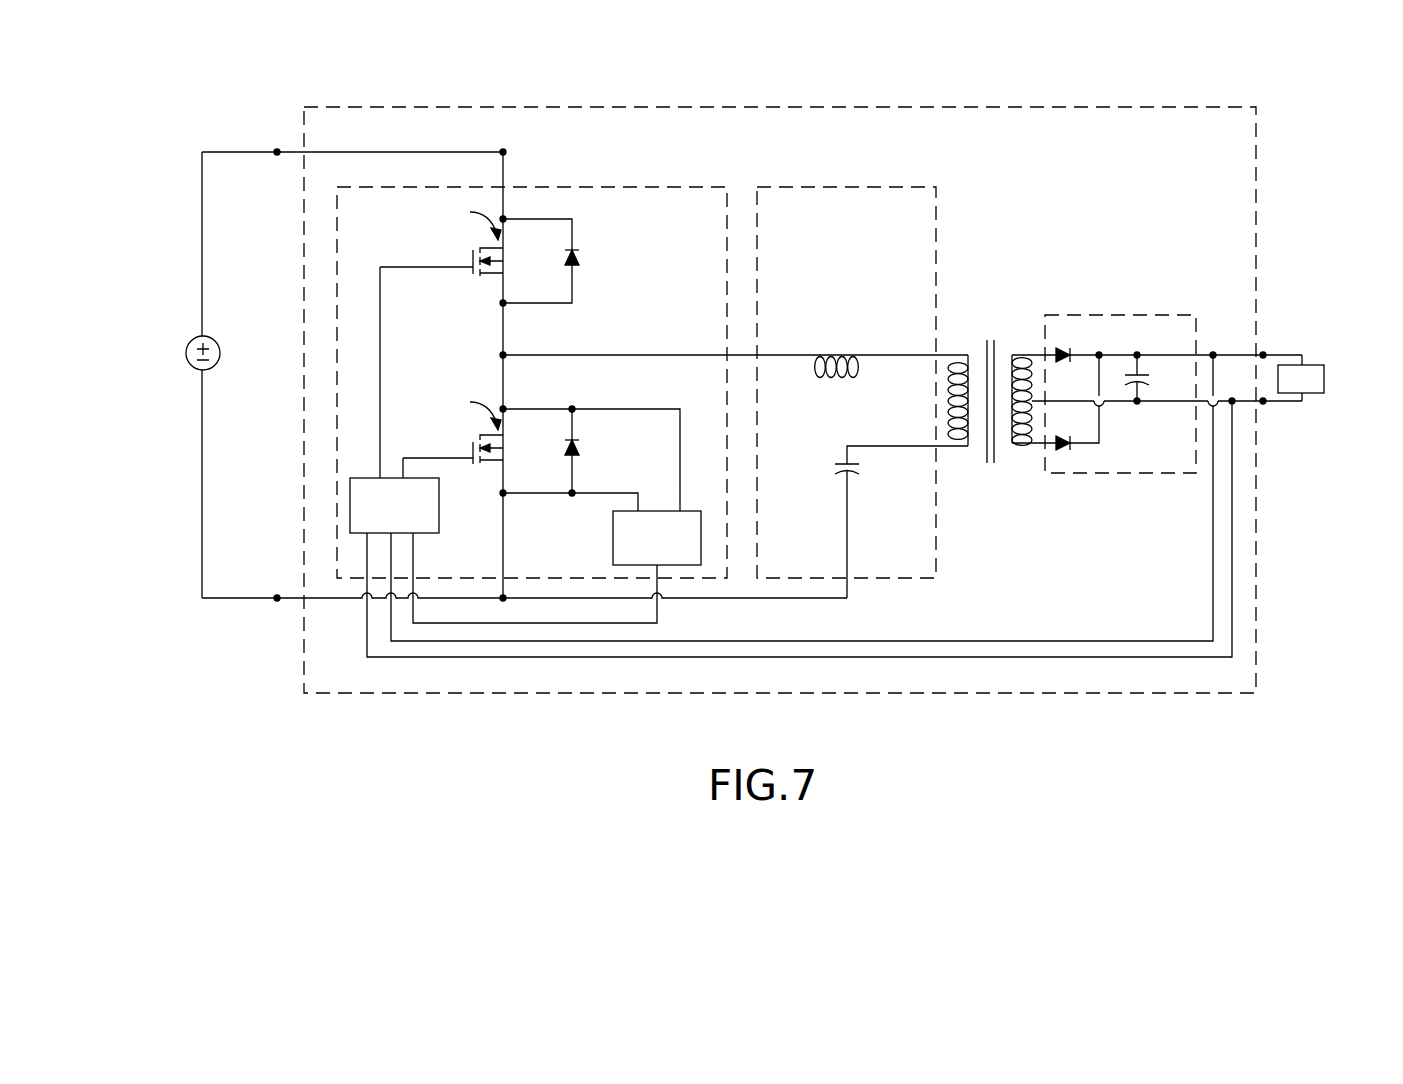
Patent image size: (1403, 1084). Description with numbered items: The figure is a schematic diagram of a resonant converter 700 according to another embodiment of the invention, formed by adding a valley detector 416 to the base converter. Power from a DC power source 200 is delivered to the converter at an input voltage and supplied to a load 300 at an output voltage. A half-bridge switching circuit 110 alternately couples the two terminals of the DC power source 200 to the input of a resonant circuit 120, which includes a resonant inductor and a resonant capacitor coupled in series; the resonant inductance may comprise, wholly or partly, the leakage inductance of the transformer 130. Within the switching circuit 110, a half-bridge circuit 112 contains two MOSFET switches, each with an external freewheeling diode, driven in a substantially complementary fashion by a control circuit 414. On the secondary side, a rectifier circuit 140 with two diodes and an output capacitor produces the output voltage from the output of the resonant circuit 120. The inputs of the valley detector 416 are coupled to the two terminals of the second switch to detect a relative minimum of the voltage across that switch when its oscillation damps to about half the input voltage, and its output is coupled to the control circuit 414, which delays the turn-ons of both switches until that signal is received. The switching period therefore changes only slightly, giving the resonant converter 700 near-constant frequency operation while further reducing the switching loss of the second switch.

The resonant converter 700 is at (788, 106).
The half-bridge switching circuit 110 is at (561, 187).
The half-bridge circuit 112 is at (436, 243).
The resonant circuit 120 is at (841, 187).
The transformer 130 is at (991, 325).
The rectifier circuit 140 is at (1129, 315).
The DC power source 200 is at (186, 353).
The load 300 is at (1307, 360).
The control circuit 414 is at (420, 533).
The valley detector 416 is at (613, 540).